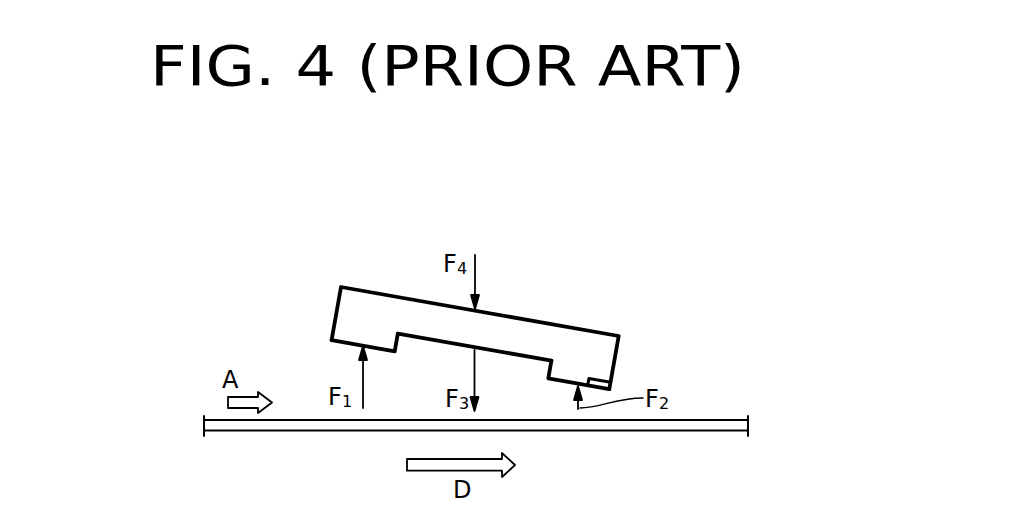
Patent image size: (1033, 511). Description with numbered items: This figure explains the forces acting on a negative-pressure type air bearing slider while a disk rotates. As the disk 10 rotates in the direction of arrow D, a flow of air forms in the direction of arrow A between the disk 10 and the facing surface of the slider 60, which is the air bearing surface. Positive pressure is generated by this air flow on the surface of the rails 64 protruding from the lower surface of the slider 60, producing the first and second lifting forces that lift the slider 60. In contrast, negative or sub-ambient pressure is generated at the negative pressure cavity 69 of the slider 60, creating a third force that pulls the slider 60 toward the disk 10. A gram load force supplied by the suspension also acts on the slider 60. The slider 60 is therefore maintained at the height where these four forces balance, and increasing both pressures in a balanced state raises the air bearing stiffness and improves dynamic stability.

The disk 10 is at (668, 425).
The slider 60 is at (378, 296).
The rails 64 is at (338, 345).
The negative pressure cavity 69 is at (418, 338).